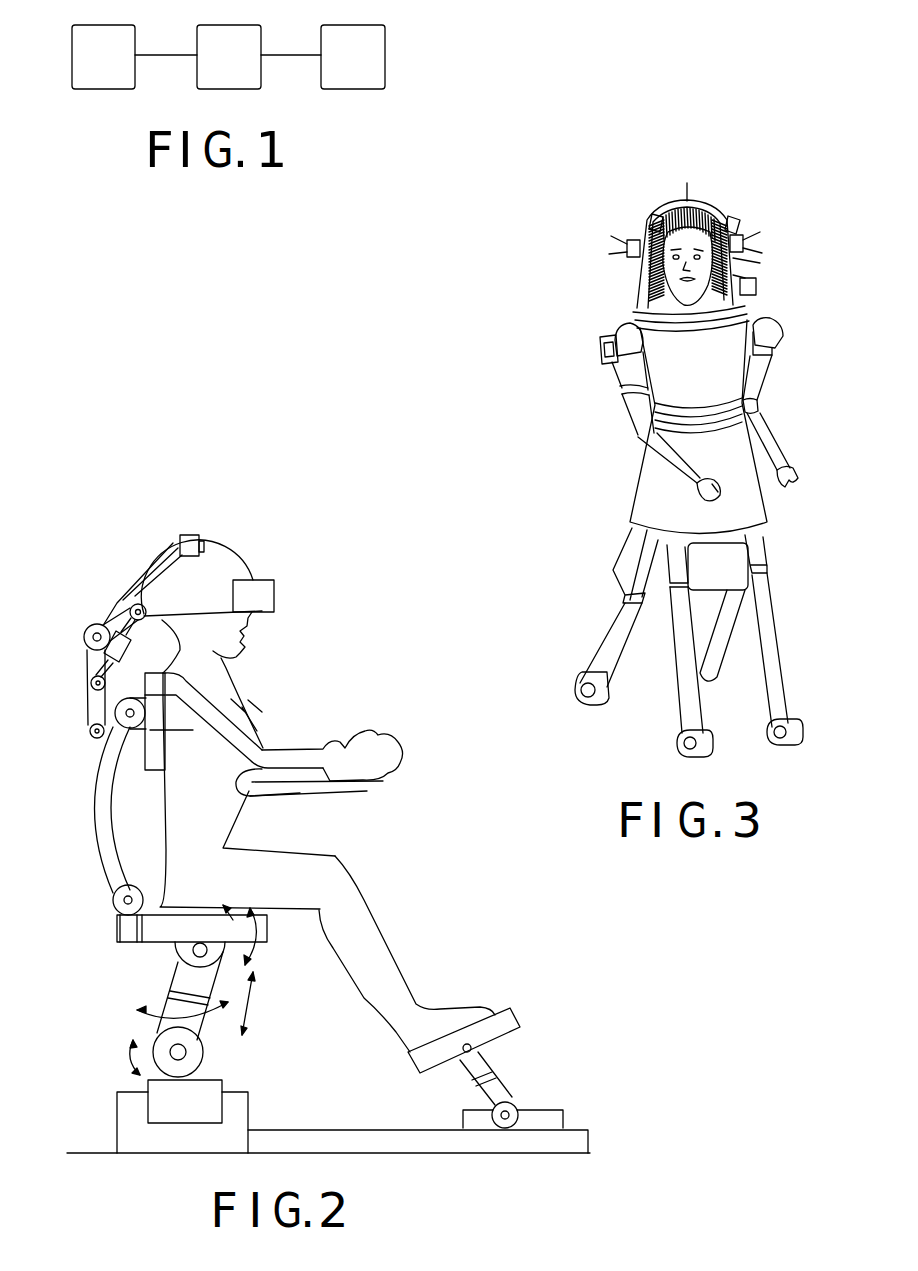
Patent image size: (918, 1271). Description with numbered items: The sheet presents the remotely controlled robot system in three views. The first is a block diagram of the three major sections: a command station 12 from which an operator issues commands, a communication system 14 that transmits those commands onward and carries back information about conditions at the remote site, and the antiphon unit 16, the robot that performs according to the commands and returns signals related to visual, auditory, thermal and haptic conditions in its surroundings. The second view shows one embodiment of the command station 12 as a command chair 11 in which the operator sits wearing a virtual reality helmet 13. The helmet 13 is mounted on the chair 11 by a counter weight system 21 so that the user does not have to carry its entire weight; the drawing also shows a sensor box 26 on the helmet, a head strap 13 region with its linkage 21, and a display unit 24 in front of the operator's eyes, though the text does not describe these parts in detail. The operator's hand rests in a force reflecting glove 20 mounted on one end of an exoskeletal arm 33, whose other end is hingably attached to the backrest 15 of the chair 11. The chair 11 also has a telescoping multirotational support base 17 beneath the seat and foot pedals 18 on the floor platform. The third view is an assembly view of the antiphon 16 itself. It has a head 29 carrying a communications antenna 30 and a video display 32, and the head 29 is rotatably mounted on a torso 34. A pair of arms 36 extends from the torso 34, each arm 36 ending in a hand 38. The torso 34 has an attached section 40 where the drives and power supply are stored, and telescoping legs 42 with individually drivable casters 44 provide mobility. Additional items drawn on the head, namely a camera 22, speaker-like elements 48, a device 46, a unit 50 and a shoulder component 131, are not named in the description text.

In FIG. 2, the command chair 11 is at (72, 855).
In FIG. 1, the command station 12 is at (118, 68).
In FIG. 2, the virtual reality helmet 13 is at (153, 558).
In FIG. 1, the communication system 14 is at (244, 68).
In FIG. 2, the backrest 15 is at (90, 795).
In FIG. 1, the antiphon unit 16 is at (368, 68).
In FIG. 3, the antiphon unit 16 is at (578, 453).
In FIG. 2, the telescoping multirotational support base 17 is at (177, 977).
In FIG. 2, the foot pedals 18 is at (508, 1008).
In FIG. 2, the force reflecting glove 20 is at (383, 779).
In FIG. 2, the counter weight system 21 is at (110, 617).
In FIG. 3, the camera 22 is at (655, 213).
In FIG. 2, the head mounted display 24 is at (271, 603).
In FIG. 2, the head position sensor 26 is at (184, 535).
In FIG. 3, the head 29 is at (640, 293).
In FIG. 3, the communications antenna 30 is at (687, 183).
In FIG. 3, the video display 32 is at (745, 278).
In FIG. 2, the exoskeletal arm 33 is at (277, 783).
In FIG. 3, the torso 34 is at (730, 368).
In FIG. 3, the arms 36 is at (773, 447).
In FIG. 3, the hand 38 is at (797, 485).
In FIG. 3, the attached section 40 is at (747, 560).
In FIG. 3, the telescoping legs 42 is at (790, 673).
In FIG. 3, the individually drivable casters 44 is at (803, 737).
In FIG. 3, the microphone 46 is at (760, 263).
In FIG. 3, the speaker 48 is at (636, 240).
In FIG. 3, the transmitter 50 is at (745, 222).
In FIG. 3, the shoulder sensor 131 is at (756, 292).